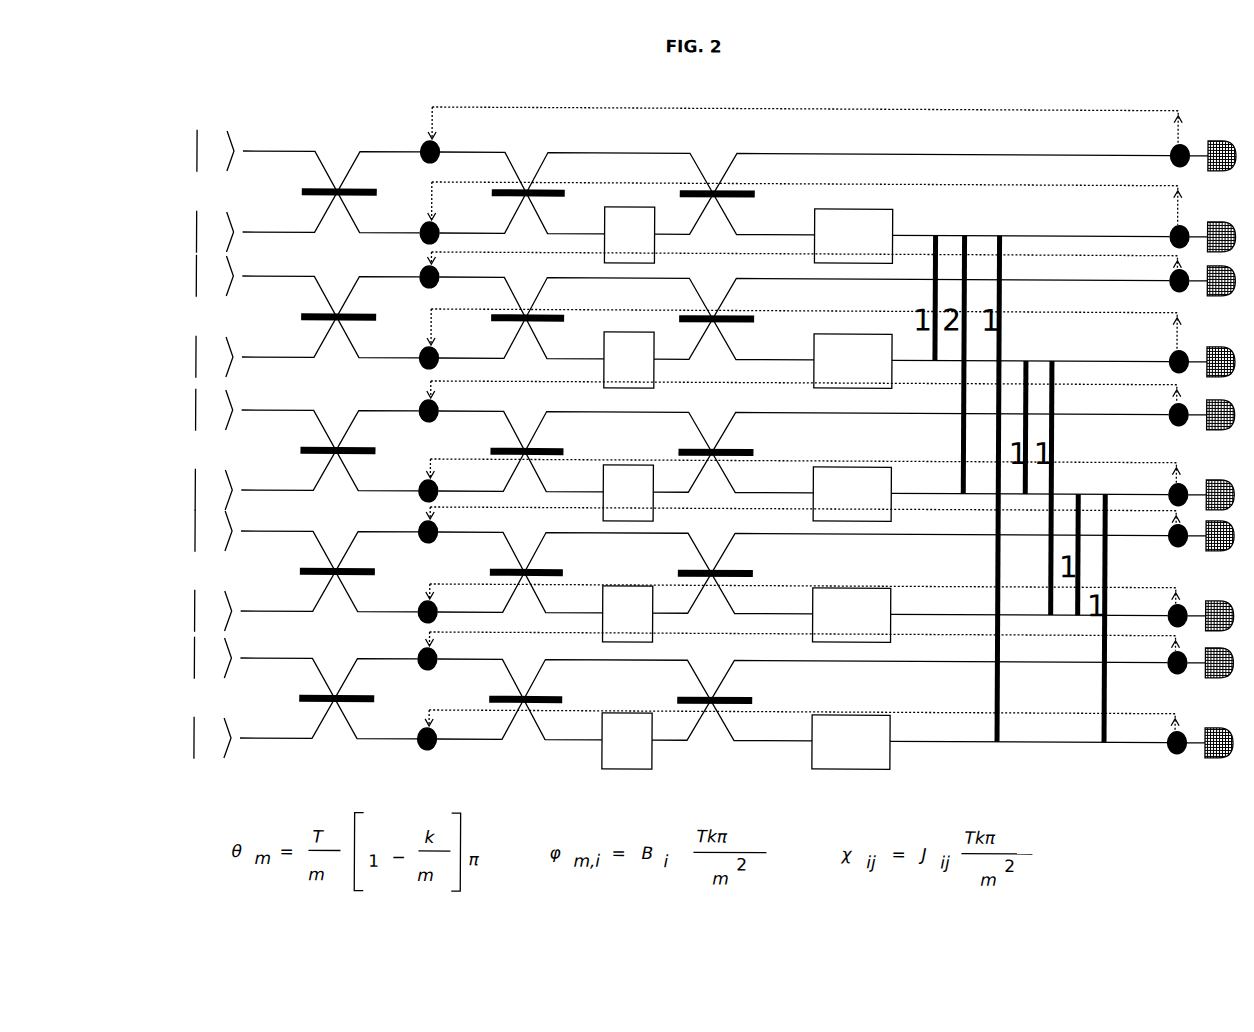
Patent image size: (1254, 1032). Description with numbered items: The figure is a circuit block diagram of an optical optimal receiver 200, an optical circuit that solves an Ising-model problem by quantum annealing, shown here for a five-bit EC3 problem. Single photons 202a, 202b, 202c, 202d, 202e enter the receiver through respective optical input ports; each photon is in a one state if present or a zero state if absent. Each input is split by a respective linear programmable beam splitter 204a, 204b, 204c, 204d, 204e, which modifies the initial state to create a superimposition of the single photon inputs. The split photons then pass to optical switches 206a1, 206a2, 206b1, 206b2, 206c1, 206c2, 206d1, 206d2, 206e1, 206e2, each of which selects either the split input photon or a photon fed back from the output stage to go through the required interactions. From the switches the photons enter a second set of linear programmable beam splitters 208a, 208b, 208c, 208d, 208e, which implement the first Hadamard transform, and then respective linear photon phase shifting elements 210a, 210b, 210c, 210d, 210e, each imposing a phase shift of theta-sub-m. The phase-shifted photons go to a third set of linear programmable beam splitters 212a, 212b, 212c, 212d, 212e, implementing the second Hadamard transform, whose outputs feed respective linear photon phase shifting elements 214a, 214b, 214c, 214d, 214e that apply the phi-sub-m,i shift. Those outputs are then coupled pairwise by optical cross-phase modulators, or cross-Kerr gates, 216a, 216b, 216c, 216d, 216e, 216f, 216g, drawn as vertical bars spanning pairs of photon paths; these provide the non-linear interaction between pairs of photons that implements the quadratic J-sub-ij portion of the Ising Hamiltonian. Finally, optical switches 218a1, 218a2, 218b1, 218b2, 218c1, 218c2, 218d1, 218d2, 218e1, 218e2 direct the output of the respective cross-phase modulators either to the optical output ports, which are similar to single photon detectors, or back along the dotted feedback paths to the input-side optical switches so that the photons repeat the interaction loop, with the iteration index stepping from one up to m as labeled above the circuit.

The optical optimal receiver 200 is at (833, 106).
The single photon 202a is at (205, 191).
The single photon 202b is at (205, 317).
The single photon 202c is at (205, 451).
The single photon 202d is at (205, 575).
The single photon 202e is at (205, 697).
The linear programmable beam splitter 204a is at (338, 190).
The linear programmable beam splitter 204b is at (338, 315).
The linear programmable beam splitter 204c is at (338, 449).
The linear programmable beam splitter 204d is at (340, 570).
The linear programmable beam splitter 204e is at (340, 697).
The optical switch 206a1 is at (437, 143).
The optical switch 206a2 is at (437, 224).
The optical switch 206b1 is at (437, 268).
The optical switch 206b2 is at (437, 349).
The optical switch 206c1 is at (437, 418).
The optical switch 206c2 is at (437, 482).
The optical switch 206d1 is at (438, 525).
The optical switch 206d2 is at (437, 603).
The optical switch 206e1 is at (438, 652).
The optical switch 206e2 is at (437, 730).
The second linear programmable beam splitter 208a is at (557, 186).
The second linear programmable beam splitter 208b is at (558, 311).
The second linear programmable beam splitter 208c is at (560, 448).
The second linear programmable beam splitter 208d is at (560, 567).
The second linear programmable beam splitter 208e is at (560, 694).
The linear photon phase shifting element 210a is at (604, 208).
The linear photon phase shifting element 210b is at (604, 334).
The linear photon phase shifting element 210c is at (604, 468).
The linear photon phase shifting element 210d is at (604, 590).
The linear photon phase shifting element 210e is at (604, 716).
The third linear programmable beam splitter 212a is at (713, 190).
The third linear programmable beam splitter 212b is at (713, 315).
The third linear programmable beam splitter 212c is at (713, 449).
The third linear programmable beam splitter 212d is at (713, 570).
The third linear programmable beam splitter 212e is at (713, 697).
The linear photon phase shifting element 214a is at (814, 209).
The linear photon phase shifting element 214b is at (814, 334).
The linear photon phase shifting element 214c is at (814, 470).
The linear photon phase shifting element 214d is at (814, 590).
The linear photon phase shifting element 214e is at (814, 718).
The optical cross-phase modulator 216a is at (934, 231).
The optical cross-phase modulator 216b is at (965, 231).
The optical cross-phase modulator 216c is at (1003, 231).
The optical cross-phase modulator 216d is at (1027, 356).
The optical cross-phase modulator 216e is at (1053, 356).
The optical cross-phase modulator 216f is at (1080, 489).
The optical cross-phase modulator 216g is at (1106, 675).
The optical switch 218a1 is at (1171, 145).
The optical switch 218a2 is at (1171, 226).
The optical switch 218b1 is at (1171, 270).
The optical switch 218b2 is at (1172, 351).
The optical switch 218c1 is at (1171, 404).
The optical switch 218c2 is at (1172, 485).
The optical switch 218d1 is at (1173, 541).
The optical switch 218d2 is at (1172, 608).
The optical switch 218e1 is at (1173, 668).
The optical switch 218e2 is at (1173, 748).